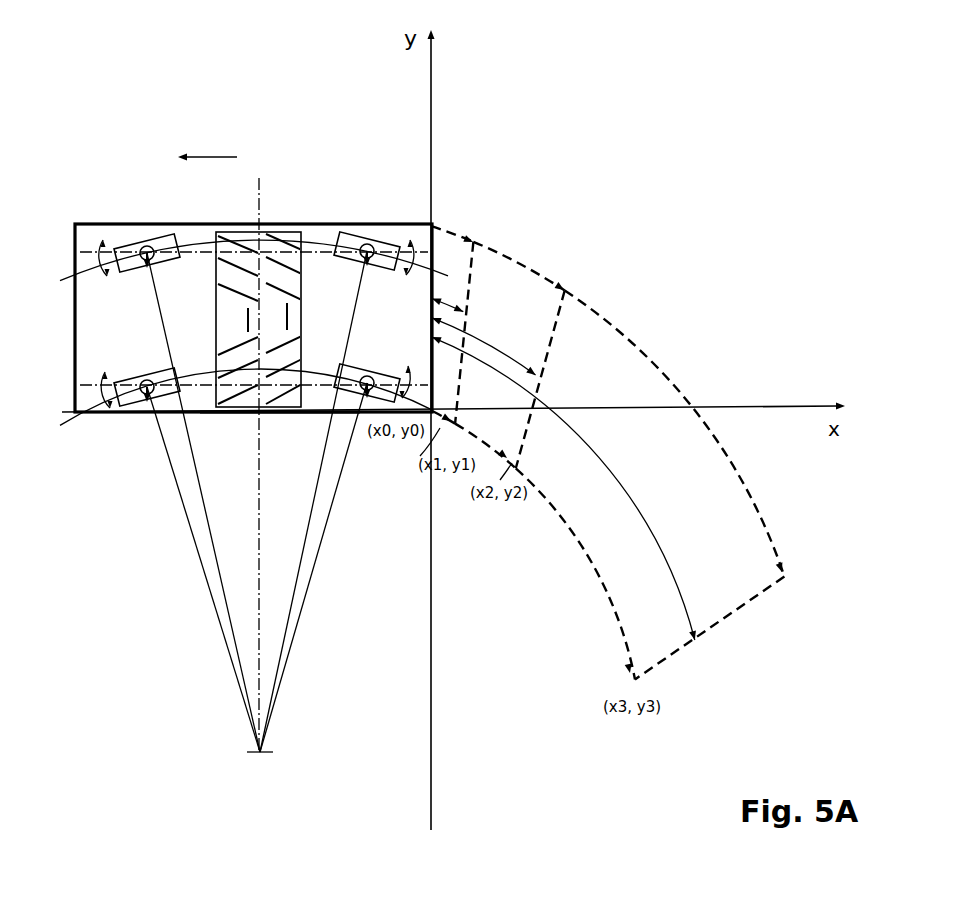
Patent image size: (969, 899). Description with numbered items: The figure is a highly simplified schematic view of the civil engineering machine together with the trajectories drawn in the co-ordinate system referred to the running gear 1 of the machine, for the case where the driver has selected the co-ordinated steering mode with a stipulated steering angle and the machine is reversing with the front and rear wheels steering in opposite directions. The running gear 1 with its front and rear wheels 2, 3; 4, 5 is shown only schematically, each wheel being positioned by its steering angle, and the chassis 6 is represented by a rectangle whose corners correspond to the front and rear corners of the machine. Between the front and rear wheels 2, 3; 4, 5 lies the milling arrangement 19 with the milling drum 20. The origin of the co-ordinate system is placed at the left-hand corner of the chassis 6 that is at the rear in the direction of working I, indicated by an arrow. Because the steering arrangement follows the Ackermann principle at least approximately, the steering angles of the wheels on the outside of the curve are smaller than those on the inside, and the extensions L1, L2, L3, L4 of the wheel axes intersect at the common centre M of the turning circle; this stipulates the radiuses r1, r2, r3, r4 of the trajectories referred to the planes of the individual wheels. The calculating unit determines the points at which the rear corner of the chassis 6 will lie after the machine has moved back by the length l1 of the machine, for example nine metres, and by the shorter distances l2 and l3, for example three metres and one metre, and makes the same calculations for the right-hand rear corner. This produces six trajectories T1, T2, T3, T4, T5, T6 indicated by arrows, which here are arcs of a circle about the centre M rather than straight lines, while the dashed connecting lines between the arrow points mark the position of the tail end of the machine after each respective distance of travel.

The running gear 1 is at (283, 209).
The front wheel 2 is at (137, 412).
The front wheel 3 is at (160, 238).
The rear wheel 4 is at (361, 366).
The rear wheel 5 is at (354, 236).
The chassis 6 is at (320, 414).
The milling arrangement 19 is at (243, 420).
The milling drum 20 is at (285, 413).
The centre of the turning circle M is at (262, 758).
The direction of working I is at (212, 156).
The trajectory T1 is at (595, 568).
The trajectory T2 is at (488, 452).
The trajectory T3 is at (436, 422).
The trajectory T4 is at (650, 357).
The trajectory T5 is at (520, 258).
The trajectory T6 is at (452, 227).
The length of the machine l1 is at (650, 522).
The shorter distance of travel l2 is at (503, 351).
The shorter distance of travel l3 is at (448, 298).
The radius of the trajectory r1 is at (326, 531).
The radius of the trajectory r2 is at (303, 561).
The radius of the trajectory r3 is at (214, 562).
The radius of the trajectory r4 is at (190, 534).
The extension of the wheel axis L1 is at (300, 620).
The extension of the wheel axis L2 is at (283, 665).
The extension of the wheel axis L3 is at (238, 665).
The extension of the wheel axis L4 is at (218, 624).